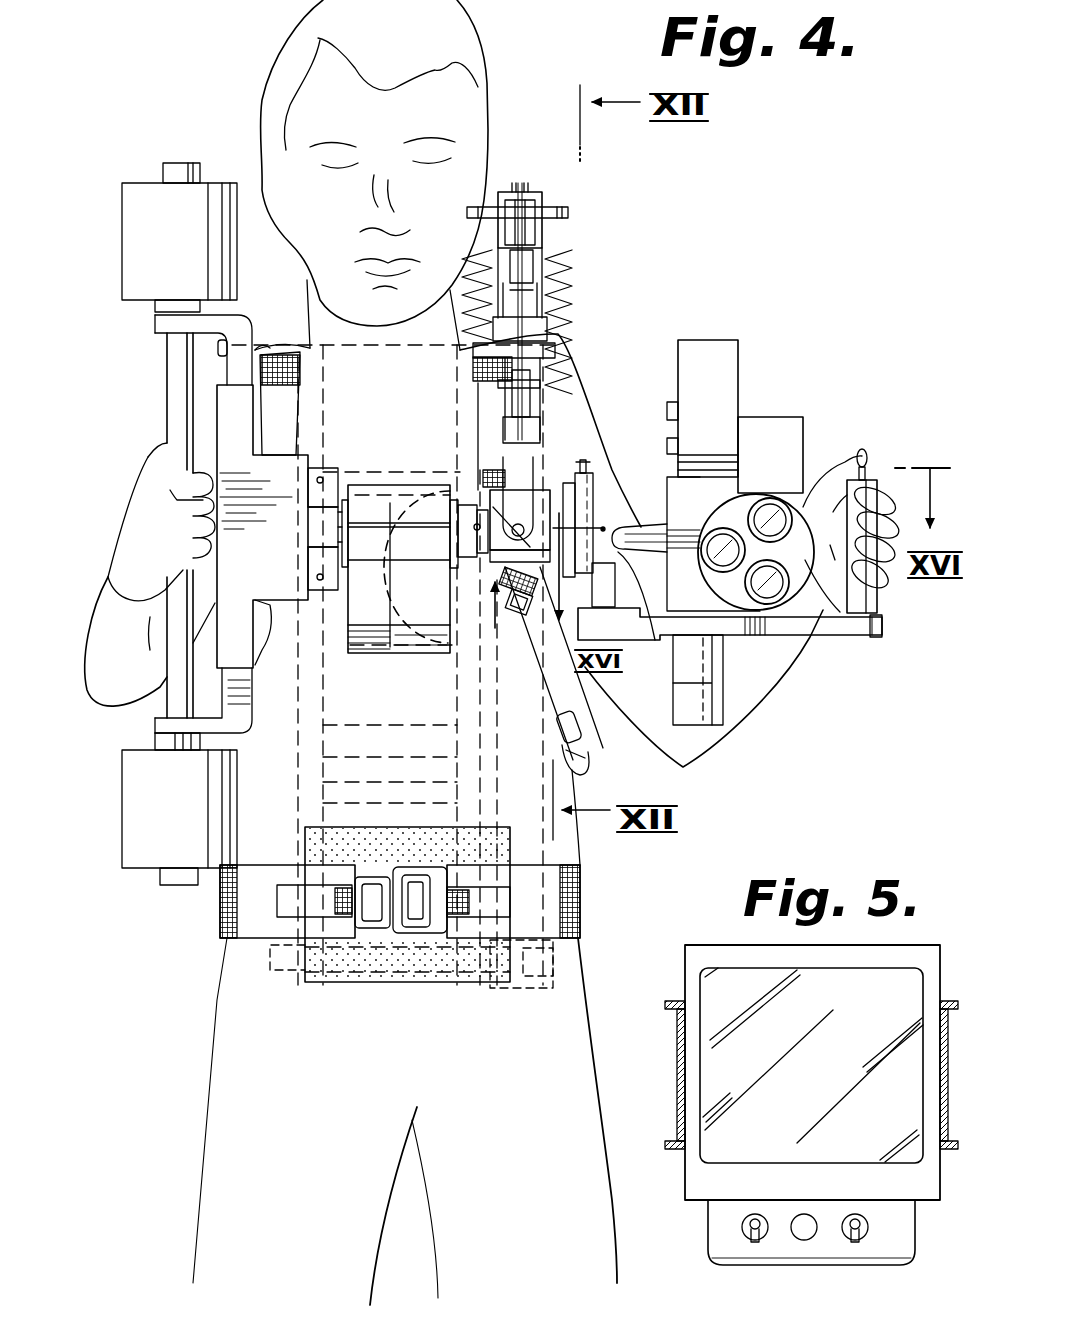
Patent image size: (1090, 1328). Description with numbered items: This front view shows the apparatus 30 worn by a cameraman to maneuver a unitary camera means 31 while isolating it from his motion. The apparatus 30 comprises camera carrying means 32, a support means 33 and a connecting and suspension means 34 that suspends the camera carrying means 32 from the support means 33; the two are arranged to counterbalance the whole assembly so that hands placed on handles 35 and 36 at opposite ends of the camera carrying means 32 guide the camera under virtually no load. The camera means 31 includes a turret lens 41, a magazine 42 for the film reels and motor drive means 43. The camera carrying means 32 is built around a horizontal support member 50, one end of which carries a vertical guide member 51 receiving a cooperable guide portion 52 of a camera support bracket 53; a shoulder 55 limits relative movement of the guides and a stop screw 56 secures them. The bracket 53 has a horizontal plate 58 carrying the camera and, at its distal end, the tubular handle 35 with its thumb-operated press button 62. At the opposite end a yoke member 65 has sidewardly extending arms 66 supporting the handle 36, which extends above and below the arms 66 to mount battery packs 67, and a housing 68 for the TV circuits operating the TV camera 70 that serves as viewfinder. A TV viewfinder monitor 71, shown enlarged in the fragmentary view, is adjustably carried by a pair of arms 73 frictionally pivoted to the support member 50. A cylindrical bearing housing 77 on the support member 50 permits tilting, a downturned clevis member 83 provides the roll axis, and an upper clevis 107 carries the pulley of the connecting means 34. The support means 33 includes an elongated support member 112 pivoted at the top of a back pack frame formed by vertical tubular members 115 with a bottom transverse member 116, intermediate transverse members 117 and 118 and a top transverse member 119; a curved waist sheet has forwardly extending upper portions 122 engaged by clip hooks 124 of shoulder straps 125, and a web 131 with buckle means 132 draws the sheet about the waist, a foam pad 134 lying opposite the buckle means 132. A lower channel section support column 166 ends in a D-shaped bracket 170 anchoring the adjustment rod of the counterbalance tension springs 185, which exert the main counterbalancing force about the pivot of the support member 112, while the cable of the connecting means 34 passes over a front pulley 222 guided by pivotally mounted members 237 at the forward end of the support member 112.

In FIG. 4, the apparatus 30 is at (676, 252).
In FIG. 4, the unitary camera means 31 is at (738, 346).
In FIG. 4, the camera carrying means 32 is at (872, 650).
In FIG. 4, the support means 33 is at (574, 201).
In FIG. 4, the connecting and suspension means 34 is at (568, 290).
In FIG. 4, the handle 35 is at (870, 480).
In FIG. 4, the handle 36 is at (173, 430).
In FIG. 4, the turret lens 41 is at (797, 573).
In FIG. 4, the magazine 42 is at (722, 338).
In FIG. 5, the magazine 42 is at (811, 1065).
In FIG. 4, the camera motor drive means 43 is at (728, 728).
In FIG. 4, the horizontal support member 50 is at (308, 535).
In FIG. 4, the guide member 51 is at (565, 483).
In FIG. 4, the guide portion 52 is at (593, 505).
In FIG. 4, the camera means support bracket 53 is at (882, 628).
In FIG. 4, the shoulder 55 is at (613, 584).
In FIG. 4, the stop screw 56 is at (588, 463).
In FIG. 4, the horizontal plate 58 is at (773, 637).
In FIG. 4, the press button 62 is at (857, 450).
In FIG. 4, the yoke member 65 is at (233, 372).
In FIG. 4, the arms 66 is at (167, 322).
In FIG. 4, the battery packs 67 is at (138, 217).
In FIG. 4, the housing 68 is at (235, 500).
In FIG. 4, the TV camera 70 is at (790, 417).
In FIG. 4, the TV viewfinder monitor 71 is at (384, 645).
In FIG. 5, the TV viewfinder monitor 71 is at (722, 948).
In FIG. 4, the arms 73 is at (447, 560).
In FIG. 5, the arms 73 is at (672, 1032).
In FIG. 4, the cylindrical bearing housing 77 is at (500, 632).
In FIG. 4, the clevis member 83 is at (540, 402).
In FIG. 4, the upper clevis 107 is at (523, 478).
In FIG. 4, the elongated support member 112 is at (537, 228).
In FIG. 4, the vertical tubular members 115 is at (390, 733).
In FIG. 4, the transverse bottom member 116 is at (278, 970).
In FIG. 4, the intermediate transverse member 117 is at (405, 792).
In FIG. 4, the intermediate transverse member 118 is at (398, 470).
In FIG. 4, the top transverse member 119 is at (270, 348).
In FIG. 4, the forwardly extending upper portions 122 is at (588, 770).
In FIG. 4, the clip hook 124 is at (583, 668).
In FIG. 4, the shoulder strap 125 is at (292, 403).
In FIG. 4, the web 131 is at (220, 925).
In FIG. 4, the buckle means 132 is at (408, 930).
In FIG. 4, the rectangular pad of foam material 134 is at (320, 982).
In FIG. 4, the lower channel section support column 166 is at (540, 848).
In FIG. 4, the D-shaped bracket 170 is at (515, 990).
In FIG. 4, the counterbalance tension springs 185 is at (562, 342).
In FIG. 4, the front pulley 222 is at (518, 192).
In FIG. 4, the pivotally mounted members 237 is at (542, 192).